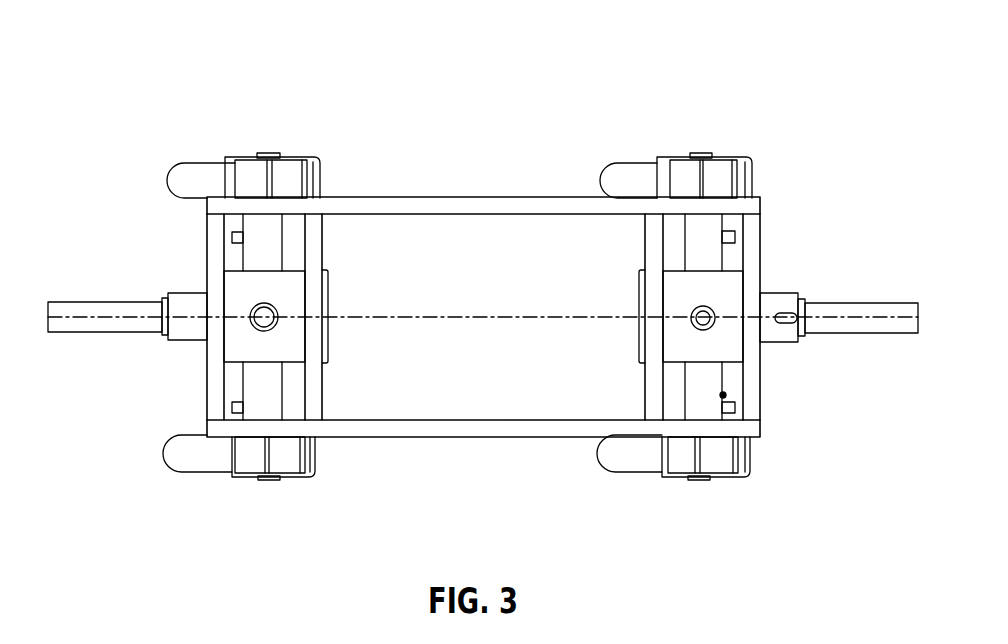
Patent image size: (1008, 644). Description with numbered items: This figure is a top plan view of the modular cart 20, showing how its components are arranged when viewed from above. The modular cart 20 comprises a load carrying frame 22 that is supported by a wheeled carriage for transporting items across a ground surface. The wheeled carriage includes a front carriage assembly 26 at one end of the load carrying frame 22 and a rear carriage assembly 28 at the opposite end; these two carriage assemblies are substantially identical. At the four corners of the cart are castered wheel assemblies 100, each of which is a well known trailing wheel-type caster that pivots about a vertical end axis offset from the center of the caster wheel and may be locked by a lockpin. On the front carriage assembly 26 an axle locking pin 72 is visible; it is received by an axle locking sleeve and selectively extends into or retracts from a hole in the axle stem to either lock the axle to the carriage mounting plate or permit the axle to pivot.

The modular cart 20 is at (483, 297).
The load carrying frame 22 is at (440, 197).
The front carriage assembly 26 is at (839, 310).
The rear carriage assembly 28 is at (180, 280).
The axle locking pin 72 is at (783, 323).
The castered wheel assembly 100 is at (270, 140).